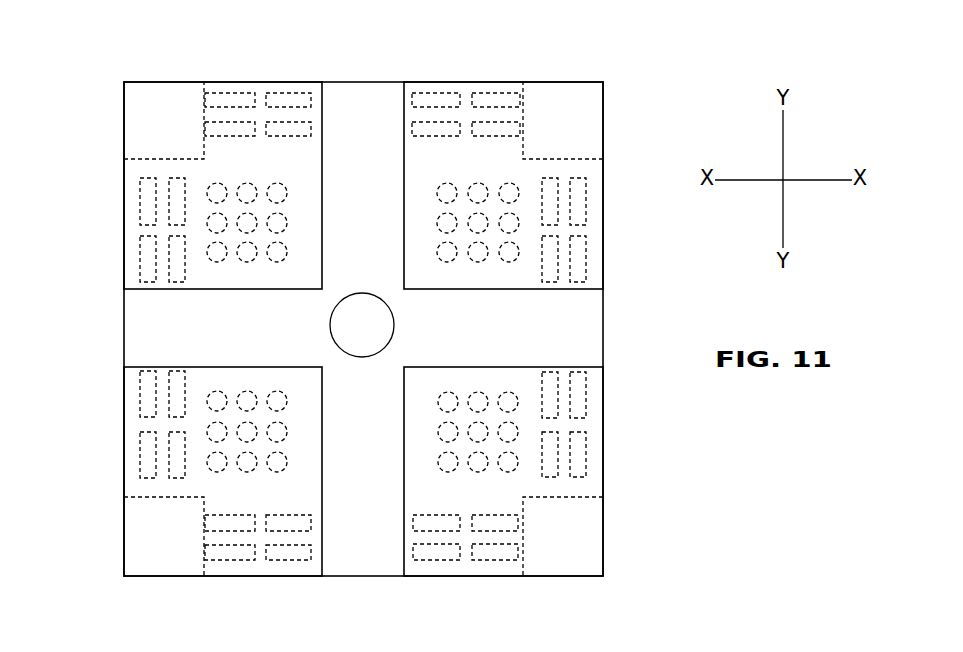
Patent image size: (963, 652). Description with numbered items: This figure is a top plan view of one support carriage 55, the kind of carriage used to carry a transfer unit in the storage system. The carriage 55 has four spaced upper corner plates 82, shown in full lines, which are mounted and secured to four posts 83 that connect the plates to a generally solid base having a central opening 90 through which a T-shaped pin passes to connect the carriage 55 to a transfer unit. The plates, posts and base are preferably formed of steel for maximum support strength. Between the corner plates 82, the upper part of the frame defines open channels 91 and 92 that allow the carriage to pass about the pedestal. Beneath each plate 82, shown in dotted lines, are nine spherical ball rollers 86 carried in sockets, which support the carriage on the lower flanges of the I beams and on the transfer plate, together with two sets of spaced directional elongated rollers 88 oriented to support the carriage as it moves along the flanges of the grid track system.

The support carriage 55 is at (116, 477).
The upper corner plates 82 is at (420, 168).
The posts 83 is at (155, 98).
The spherical ball rollers 86 is at (277, 265).
The directional elongated rollers 88 is at (225, 92).
The central opening 90 is at (360, 305).
The open channel 91 is at (360, 90).
The open channel 92 is at (137, 322).